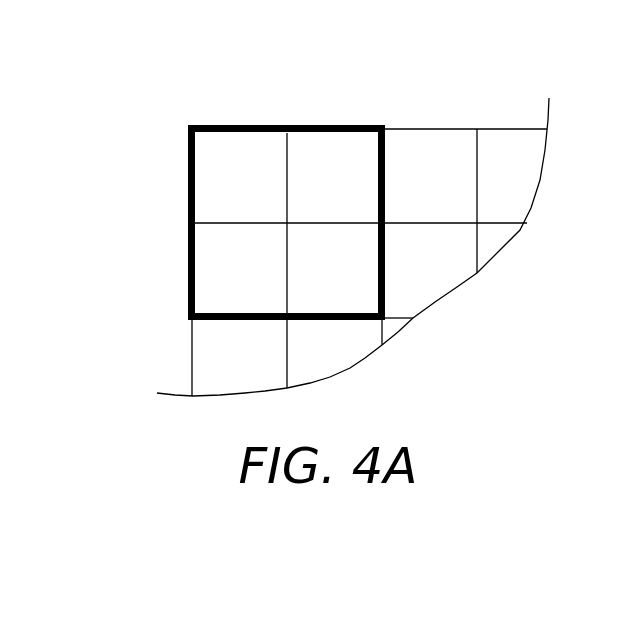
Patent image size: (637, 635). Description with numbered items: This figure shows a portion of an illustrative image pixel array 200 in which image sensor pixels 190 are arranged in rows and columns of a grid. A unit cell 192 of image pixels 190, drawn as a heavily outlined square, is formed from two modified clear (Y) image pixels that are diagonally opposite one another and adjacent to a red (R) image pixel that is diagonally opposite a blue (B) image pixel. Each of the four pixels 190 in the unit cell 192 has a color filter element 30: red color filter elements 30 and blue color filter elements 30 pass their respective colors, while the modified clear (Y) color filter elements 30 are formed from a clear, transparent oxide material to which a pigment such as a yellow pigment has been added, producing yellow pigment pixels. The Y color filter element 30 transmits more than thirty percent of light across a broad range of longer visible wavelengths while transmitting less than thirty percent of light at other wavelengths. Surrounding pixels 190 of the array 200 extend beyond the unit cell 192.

The pixel array 200 is at (180, 62).
The unit cell 192 is at (234, 127).
The image sensor pixels 190 is at (205, 363).
The color filter elements 30 is at (275, 212).